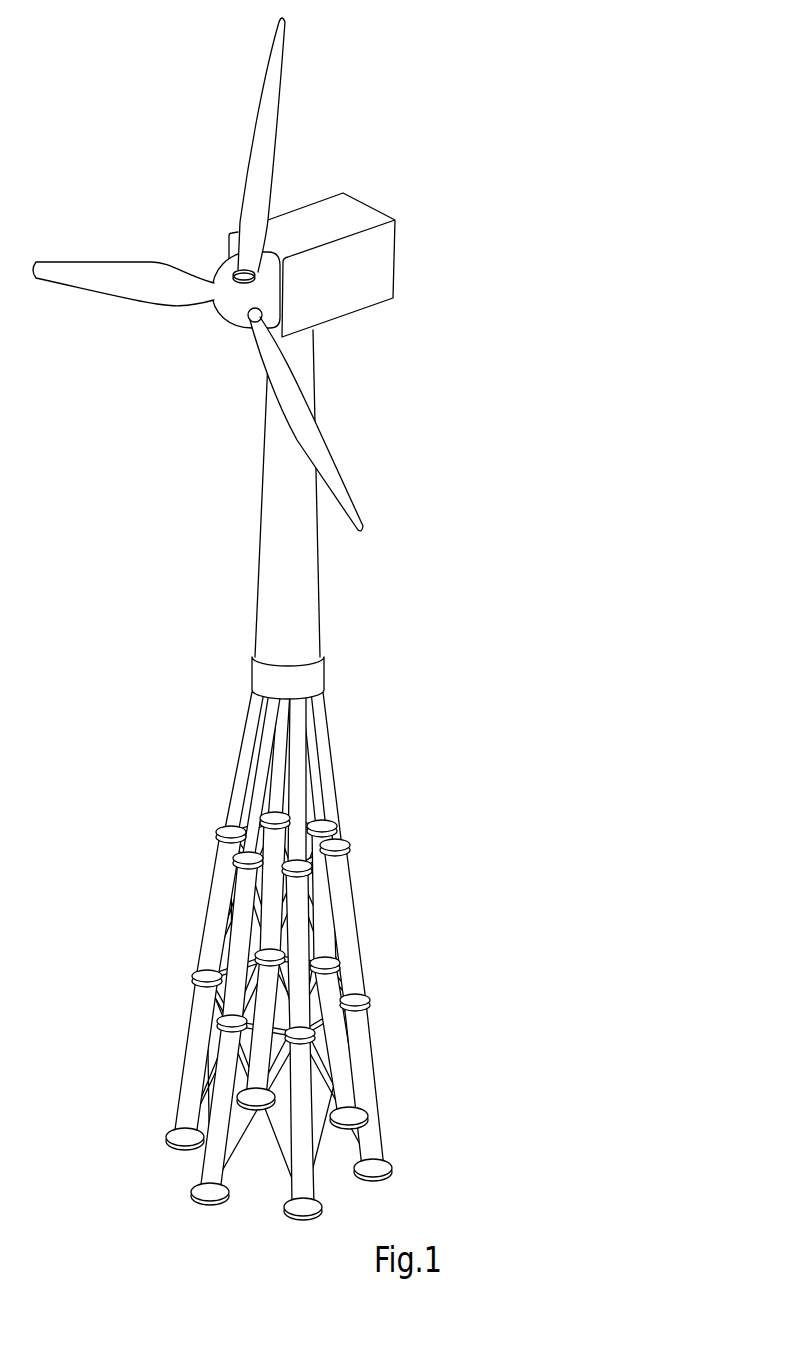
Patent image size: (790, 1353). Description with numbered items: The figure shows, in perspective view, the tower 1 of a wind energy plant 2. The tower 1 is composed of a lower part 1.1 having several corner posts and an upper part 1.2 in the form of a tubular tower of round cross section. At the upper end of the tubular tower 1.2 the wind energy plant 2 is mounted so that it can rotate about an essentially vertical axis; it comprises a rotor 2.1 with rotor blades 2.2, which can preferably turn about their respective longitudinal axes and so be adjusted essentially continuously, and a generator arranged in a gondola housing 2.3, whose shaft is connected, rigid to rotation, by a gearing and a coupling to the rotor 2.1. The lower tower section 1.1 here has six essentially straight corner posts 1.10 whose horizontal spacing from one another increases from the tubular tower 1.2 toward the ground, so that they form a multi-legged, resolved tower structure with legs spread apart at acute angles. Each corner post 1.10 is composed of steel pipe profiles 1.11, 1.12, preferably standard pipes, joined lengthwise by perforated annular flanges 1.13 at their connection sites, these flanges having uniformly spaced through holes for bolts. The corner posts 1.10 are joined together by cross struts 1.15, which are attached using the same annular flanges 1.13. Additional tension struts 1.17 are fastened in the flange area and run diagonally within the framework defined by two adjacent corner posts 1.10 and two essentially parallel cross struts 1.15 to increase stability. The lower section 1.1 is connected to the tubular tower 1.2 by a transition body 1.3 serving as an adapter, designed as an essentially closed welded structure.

The tower 1 is at (178, 550).
The lower part 1.1 is at (420, 862).
The upper part 1.2 is at (283, 487).
The transition body 1.3 is at (263, 672).
The corner posts 1.10 is at (222, 913).
The steel pipe profiles 1.11 is at (300, 917).
The steel pipe profiles 1.12 is at (327, 797).
The perforated flanges 1.13 is at (345, 838).
The cross struts 1.15 is at (275, 857).
The tension struts 1.17 is at (323, 1055).
The wind energy plant 2 is at (397, 177).
The rotor 2.1 is at (232, 310).
The rotor blades 2.2 is at (270, 120).
The gondola housing 2.3 is at (378, 269).